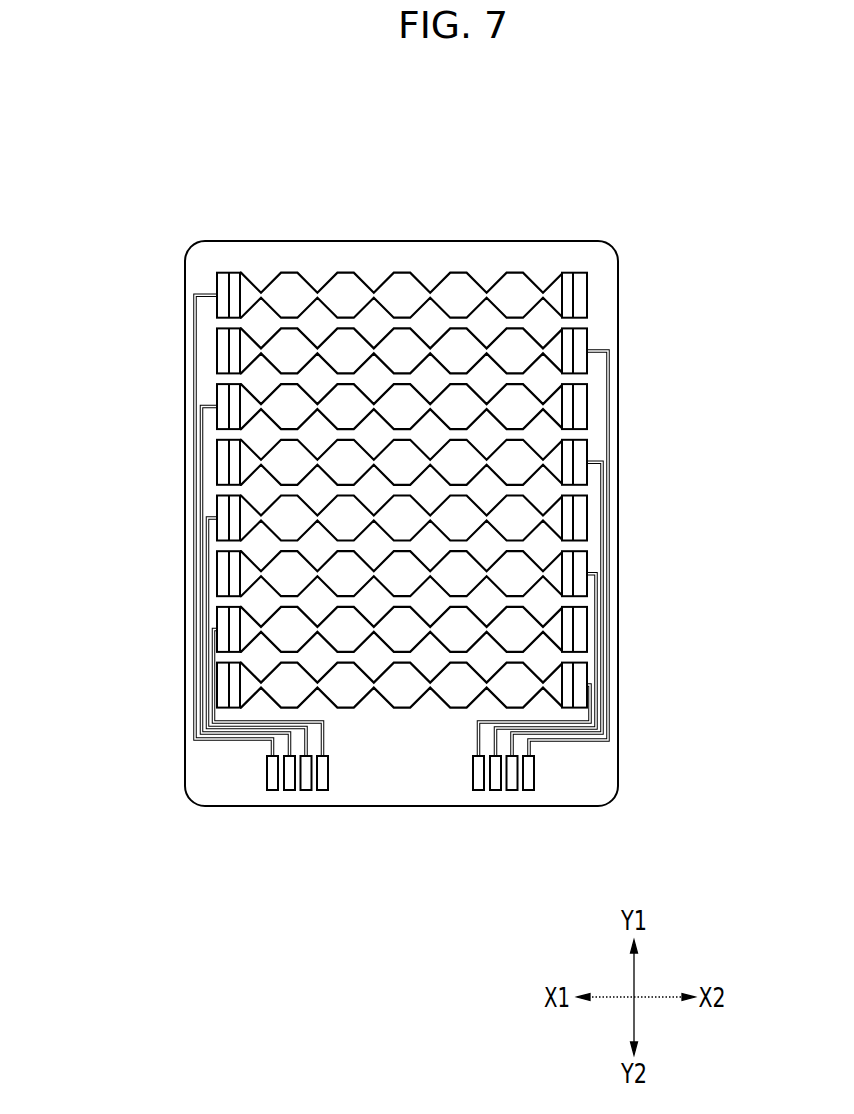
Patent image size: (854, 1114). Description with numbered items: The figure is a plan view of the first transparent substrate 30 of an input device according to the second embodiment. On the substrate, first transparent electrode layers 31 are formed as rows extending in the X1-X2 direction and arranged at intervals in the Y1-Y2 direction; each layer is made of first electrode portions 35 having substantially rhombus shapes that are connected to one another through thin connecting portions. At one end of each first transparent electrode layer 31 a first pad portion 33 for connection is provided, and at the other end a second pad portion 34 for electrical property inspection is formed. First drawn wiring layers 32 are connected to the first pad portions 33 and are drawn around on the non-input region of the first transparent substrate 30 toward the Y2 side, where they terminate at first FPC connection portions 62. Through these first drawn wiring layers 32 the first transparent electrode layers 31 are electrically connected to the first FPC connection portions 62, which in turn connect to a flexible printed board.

The first transparent substrate 30 is at (489, 258).
The first transparent electrode layers 31 is at (297, 490).
The first drawn wiring layers 32 is at (202, 603).
The first pad portions 33 is at (580, 337).
The second pad portions 34 is at (223, 348).
The first electrode portions 35 is at (290, 510).
The first FPC connection portions 62 is at (480, 788).